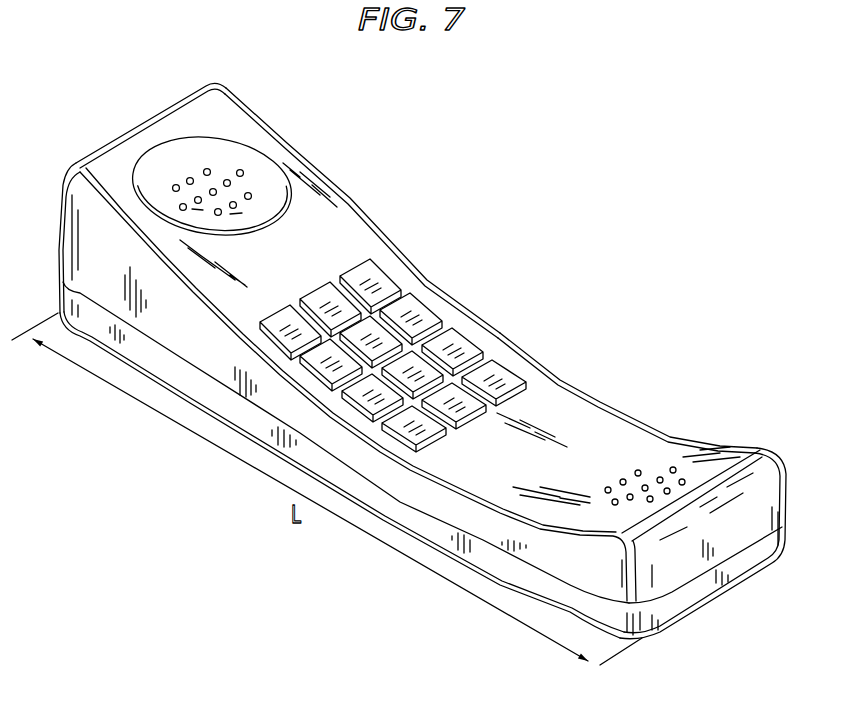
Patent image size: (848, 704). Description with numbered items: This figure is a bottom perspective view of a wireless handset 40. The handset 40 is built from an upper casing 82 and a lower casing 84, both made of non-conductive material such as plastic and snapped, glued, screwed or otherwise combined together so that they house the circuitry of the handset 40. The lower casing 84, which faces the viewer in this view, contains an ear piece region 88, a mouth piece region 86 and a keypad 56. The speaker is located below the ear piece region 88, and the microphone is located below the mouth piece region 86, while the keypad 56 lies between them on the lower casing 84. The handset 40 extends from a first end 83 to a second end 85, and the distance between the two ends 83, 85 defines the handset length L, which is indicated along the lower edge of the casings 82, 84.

The handset 40 is at (661, 348).
The keypad 56 is at (438, 300).
The upper casing 82 is at (408, 520).
The first end 83 is at (146, 126).
The lower casing 84 is at (583, 408).
The second end 85 is at (770, 483).
The mouth piece region 86 is at (672, 455).
The ear piece region 88 is at (247, 152).